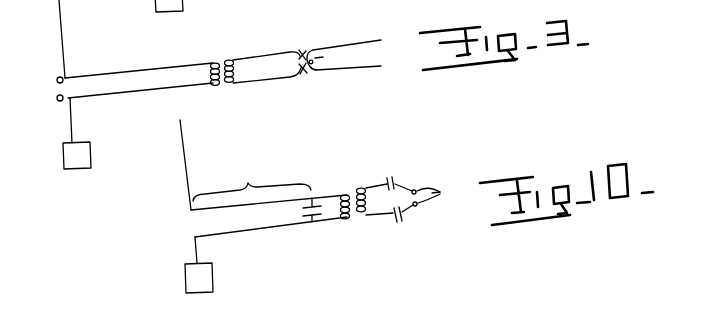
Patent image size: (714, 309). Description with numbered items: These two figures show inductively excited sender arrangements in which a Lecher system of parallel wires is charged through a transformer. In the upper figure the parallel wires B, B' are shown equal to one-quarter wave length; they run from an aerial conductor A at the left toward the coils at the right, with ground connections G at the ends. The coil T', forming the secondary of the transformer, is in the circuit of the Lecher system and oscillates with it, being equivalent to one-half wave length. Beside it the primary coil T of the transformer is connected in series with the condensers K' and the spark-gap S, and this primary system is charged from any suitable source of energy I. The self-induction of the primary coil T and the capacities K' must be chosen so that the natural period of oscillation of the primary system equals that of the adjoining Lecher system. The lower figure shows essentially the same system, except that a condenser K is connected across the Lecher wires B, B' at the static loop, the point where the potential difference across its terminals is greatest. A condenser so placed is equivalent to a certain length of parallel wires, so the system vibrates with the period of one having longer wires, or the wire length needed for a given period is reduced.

In FIG. 9, the antenna / aerial conductor A is at (61, 34).
In FIG. 10, the antenna / aerial conductor A is at (185, 170).
In FIG. 9, the upper conductor of quarter-wave line B is at (139, 58).
In FIG. 10, the upper conductor of quarter-wave line B is at (269, 199).
In FIG. 9, the lower conductor of quarter-wave line B' is at (140, 106).
In FIG. 10, the lower conductor of quarter-wave line B' is at (271, 237).
In FIG. 9, the ground connection G is at (123, 84).
In FIG. 10, the ground connection G is at (199, 265).
In FIG. 9, the secondary coil of the transformer T' is at (250, 75).
In FIG. 10, the secondary coil of the transformer T' is at (361, 225).
In FIG. 10, the primary coil of the transformer T is at (352, 187).
In FIG. 9, the condensers K' is at (313, 61).
In FIG. 10, the condensers K' is at (409, 205).
In FIG. 10, the condenser K is at (300, 214).
In FIG. 9, the spark-gap S is at (324, 60).
In FIG. 10, the spark-gap S is at (434, 194).
In FIG. 9, the source of energy I is at (353, 55).